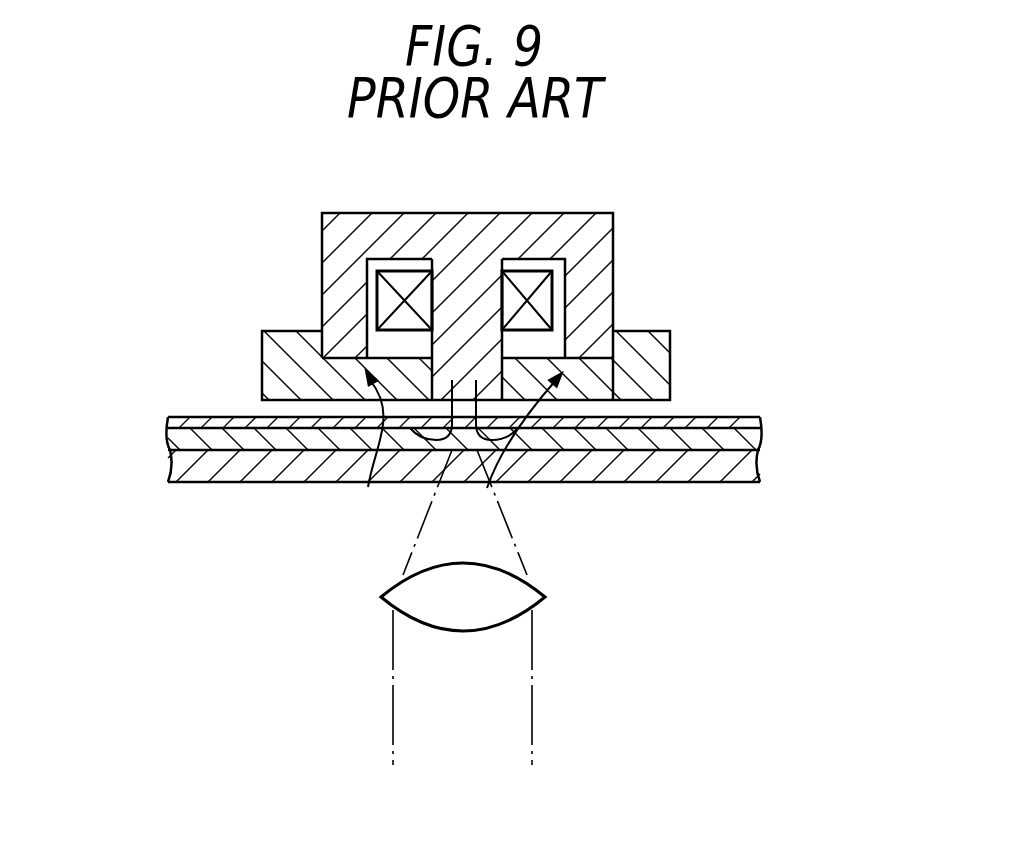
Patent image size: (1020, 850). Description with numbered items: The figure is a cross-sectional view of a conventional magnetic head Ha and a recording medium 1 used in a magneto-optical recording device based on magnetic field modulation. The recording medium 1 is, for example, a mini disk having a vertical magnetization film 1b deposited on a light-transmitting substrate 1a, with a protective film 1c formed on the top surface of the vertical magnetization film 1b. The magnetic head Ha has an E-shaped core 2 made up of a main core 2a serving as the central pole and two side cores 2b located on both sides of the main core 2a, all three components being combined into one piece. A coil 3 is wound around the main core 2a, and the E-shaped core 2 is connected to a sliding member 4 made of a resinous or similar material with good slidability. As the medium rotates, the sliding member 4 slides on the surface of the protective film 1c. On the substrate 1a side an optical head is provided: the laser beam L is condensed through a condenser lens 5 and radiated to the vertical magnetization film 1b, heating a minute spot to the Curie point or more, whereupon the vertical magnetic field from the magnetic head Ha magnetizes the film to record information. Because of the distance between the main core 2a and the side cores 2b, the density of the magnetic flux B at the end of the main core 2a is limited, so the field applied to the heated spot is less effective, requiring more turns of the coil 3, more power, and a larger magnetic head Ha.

The recording medium 1 is at (429, 452).
The light-transmitting substrate 1a is at (305, 473).
The vertical magnetization film 1b is at (172, 433).
The protective film 1c is at (205, 418).
The E-shaped core 2 is at (469, 278).
The main core 2a is at (462, 315).
The side cores 2b is at (330, 272).
The coil 3 is at (547, 297).
The sliding member 4 is at (655, 360).
The condenser lens 5 is at (522, 595).
The magnetic flux B is at (461, 452).
The laser beam L is at (482, 523).
The magnetic head Ha is at (485, 264).